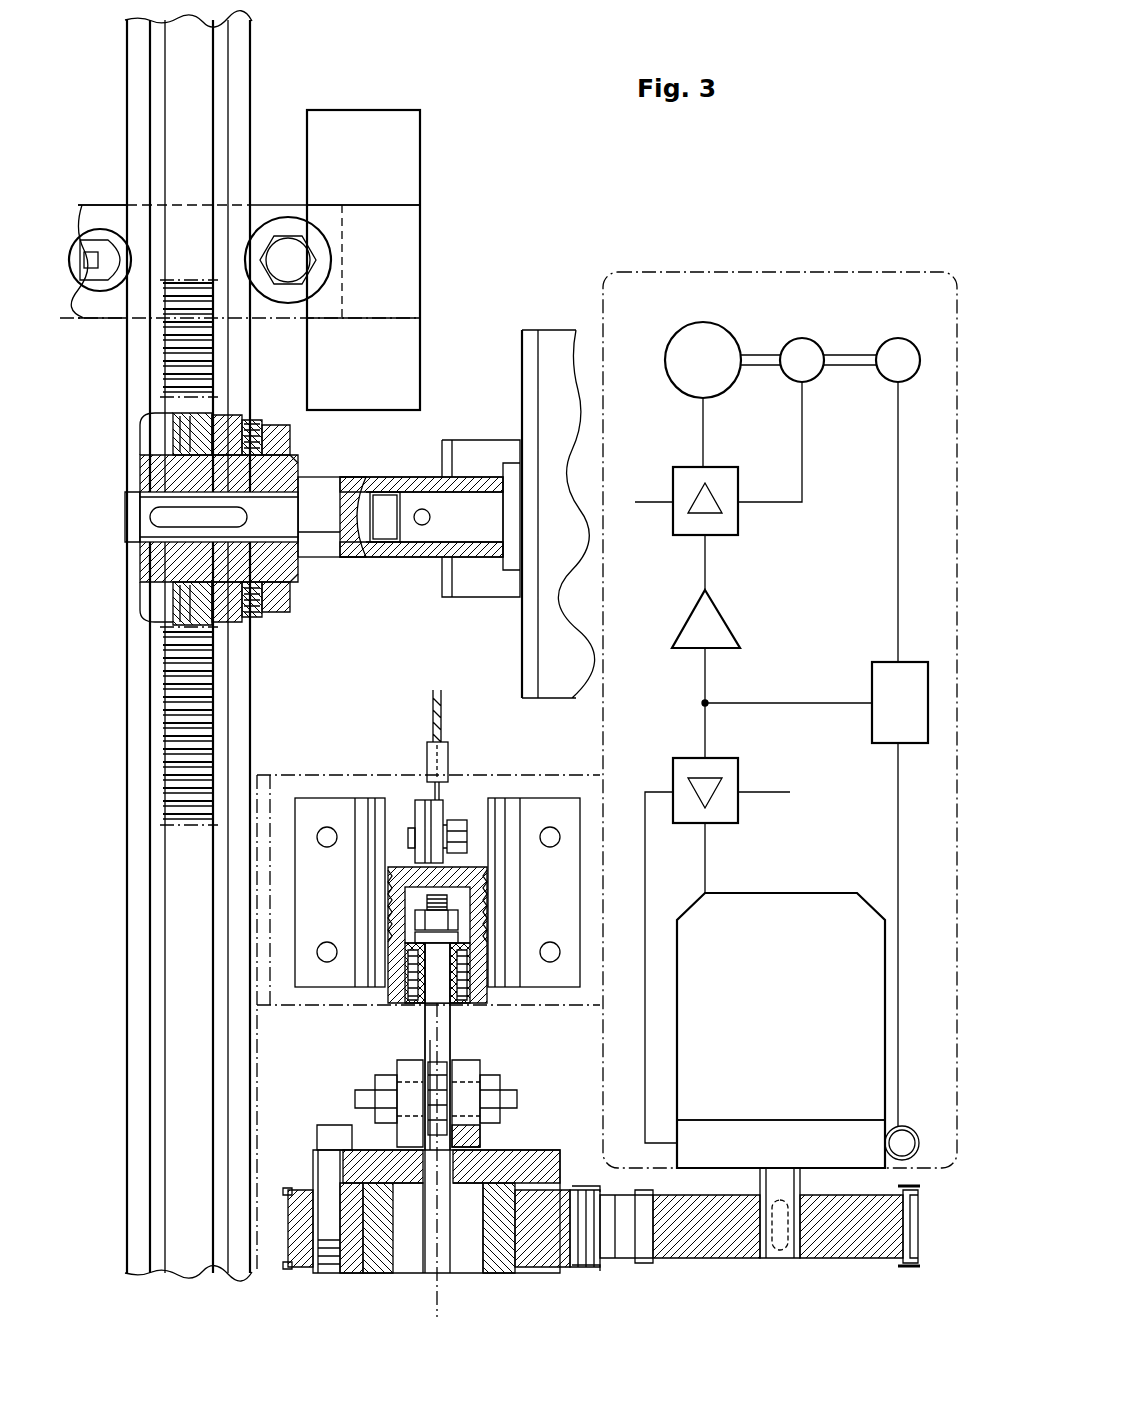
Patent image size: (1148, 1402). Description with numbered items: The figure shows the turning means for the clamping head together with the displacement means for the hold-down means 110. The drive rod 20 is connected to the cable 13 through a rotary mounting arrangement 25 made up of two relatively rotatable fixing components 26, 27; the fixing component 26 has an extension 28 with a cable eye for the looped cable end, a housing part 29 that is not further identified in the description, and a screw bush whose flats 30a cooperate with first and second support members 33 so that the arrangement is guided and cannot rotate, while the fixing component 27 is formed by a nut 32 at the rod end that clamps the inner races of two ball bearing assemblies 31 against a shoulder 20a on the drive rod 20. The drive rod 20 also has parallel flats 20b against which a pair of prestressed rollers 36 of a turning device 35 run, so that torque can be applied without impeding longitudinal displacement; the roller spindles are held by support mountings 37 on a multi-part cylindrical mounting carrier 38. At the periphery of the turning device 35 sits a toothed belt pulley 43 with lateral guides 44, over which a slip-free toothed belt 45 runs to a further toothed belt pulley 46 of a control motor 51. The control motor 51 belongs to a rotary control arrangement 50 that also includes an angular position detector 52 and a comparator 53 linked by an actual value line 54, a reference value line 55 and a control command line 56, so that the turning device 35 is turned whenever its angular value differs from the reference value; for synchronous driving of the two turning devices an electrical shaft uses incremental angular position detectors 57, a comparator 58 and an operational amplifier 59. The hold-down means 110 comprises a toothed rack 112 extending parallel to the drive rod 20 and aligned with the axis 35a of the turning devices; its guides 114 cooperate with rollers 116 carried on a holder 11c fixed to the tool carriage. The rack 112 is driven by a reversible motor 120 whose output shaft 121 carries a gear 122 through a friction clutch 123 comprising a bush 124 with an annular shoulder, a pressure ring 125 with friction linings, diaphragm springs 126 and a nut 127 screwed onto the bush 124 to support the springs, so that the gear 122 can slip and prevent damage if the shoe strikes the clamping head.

The hold-down means 110 is at (125, 1022).
The guides 114 is at (235, 900).
The toothed rack 112 is at (175, 736).
The gear 122 is at (183, 622).
The rollers 116 is at (100, 228).
The holder 11c is at (400, 246).
The reversible motor 120 is at (540, 375).
The output shaft 121 is at (318, 495).
The friction clutch 123 is at (130, 440).
The bush 124 is at (157, 568).
The pressure ring 125 is at (236, 413).
The diaphragm springs 126 is at (257, 608).
The nut 127 is at (292, 600).
The cable 13 is at (437, 700).
The rotary mounting arrangement 25 is at (412, 765).
The fixing component 26 is at (478, 857).
The fixing component 27 is at (465, 943).
The extension 28 is at (420, 812).
The housing block 29 is at (415, 876).
The flats 30a is at (390, 905).
The ball bearing assemblies 31 is at (490, 1000).
The nut 32 is at (415, 918).
The support members 33 is at (378, 800).
The drive rod 20 is at (456, 903).
The shoulder 20a is at (435, 1025).
The flats 20b is at (425, 1032).
The turning device 35 is at (488, 1070).
The axis 35a is at (440, 1300).
The rollers 36 is at (430, 1070).
The support mountings 37 is at (405, 1130).
The mounting carrier 38 is at (545, 1158).
The toothed belt pulley 43 is at (540, 1260).
The lateral guides 44 is at (575, 1265).
The toothed belt 45 is at (615, 1262).
The toothed belt pulley 46 is at (715, 1262).
The rotary control arrangement 50 is at (835, 272).
The control motor 51 is at (688, 345).
The angular position detector 52 is at (800, 350).
The incremental angular position detectors 57 is at (893, 352).
The comparator 53 is at (730, 525).
The actual value line 54 is at (802, 440).
The reference value line 55 is at (645, 502).
The control command line 56 is at (703, 432).
The comparator 58 is at (885, 688).
The operational amplifier 59 is at (718, 628).